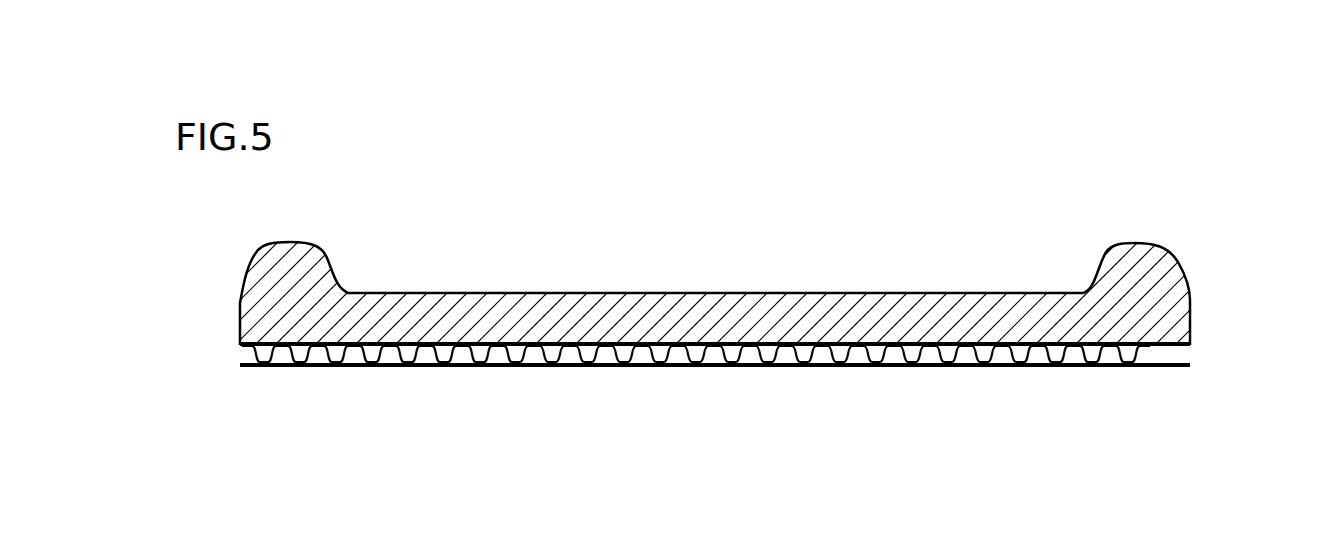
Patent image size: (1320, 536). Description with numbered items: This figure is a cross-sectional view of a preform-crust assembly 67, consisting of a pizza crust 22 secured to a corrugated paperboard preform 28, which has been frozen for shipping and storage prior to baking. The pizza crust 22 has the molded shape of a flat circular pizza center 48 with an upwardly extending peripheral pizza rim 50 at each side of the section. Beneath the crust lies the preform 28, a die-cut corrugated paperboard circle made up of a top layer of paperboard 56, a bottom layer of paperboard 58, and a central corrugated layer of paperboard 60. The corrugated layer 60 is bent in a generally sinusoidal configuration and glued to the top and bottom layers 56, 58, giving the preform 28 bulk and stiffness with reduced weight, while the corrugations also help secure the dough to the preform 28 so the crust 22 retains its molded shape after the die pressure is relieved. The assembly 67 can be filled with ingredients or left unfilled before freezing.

The pizza crust 22 is at (546, 294).
The corrugated paperboard preform 28 is at (1113, 370).
The pizza center 48 is at (948, 294).
The peripheral pizza rim 50 is at (292, 240).
The top layer of paperboard 56 is at (1162, 343).
The bottom layer of paperboard 58 is at (1182, 370).
The central corrugated layer of paperboard 60 is at (1182, 348).
The preform-crust assembly 67 is at (708, 262).